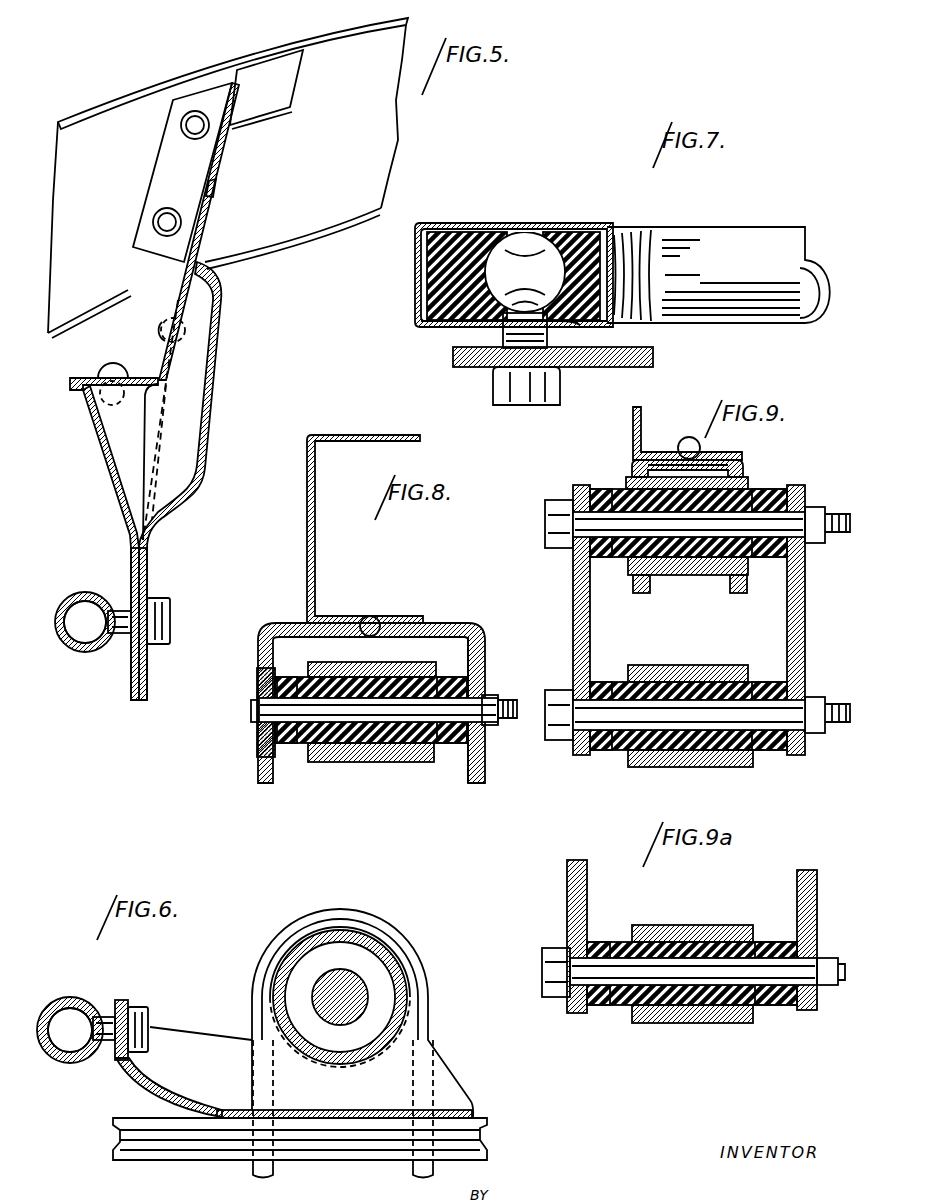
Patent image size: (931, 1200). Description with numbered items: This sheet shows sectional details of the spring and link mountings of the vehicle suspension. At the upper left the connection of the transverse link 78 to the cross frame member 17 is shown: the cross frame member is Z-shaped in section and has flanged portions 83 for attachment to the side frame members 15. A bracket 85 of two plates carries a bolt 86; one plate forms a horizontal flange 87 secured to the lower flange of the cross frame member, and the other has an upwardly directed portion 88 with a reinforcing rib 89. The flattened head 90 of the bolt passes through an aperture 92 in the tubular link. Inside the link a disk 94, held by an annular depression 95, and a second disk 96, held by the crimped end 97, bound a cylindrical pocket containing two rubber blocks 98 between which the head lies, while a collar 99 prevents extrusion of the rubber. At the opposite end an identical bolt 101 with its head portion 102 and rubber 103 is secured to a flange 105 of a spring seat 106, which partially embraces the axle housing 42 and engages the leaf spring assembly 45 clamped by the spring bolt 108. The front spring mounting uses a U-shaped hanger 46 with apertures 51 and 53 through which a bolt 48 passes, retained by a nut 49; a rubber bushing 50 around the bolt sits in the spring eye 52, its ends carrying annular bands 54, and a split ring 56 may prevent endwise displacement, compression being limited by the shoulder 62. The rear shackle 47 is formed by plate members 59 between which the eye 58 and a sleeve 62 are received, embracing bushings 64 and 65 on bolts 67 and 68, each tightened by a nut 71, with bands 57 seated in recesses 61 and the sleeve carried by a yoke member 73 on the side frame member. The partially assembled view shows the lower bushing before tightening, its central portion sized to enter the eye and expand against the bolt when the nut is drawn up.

In FIG. 5, the side frame member 15 is at (378, 137).
In FIG. 8, the side frame member 15 is at (306, 566).
In FIG. 9, the side frame member 15 is at (631, 428).
In FIG. 5, the cross frame member 17 is at (222, 162).
In FIG. 6, the axle housing 42 is at (300, 952).
In FIG. 6, the leaf spring assembly 45 is at (183, 1135).
In FIG. 8, the hanger 46 is at (470, 630).
In FIG. 9, the shackle 47 is at (552, 583).
In FIG. 8, the bolt 48 is at (290, 706).
In FIG. 8, the nut 49 is at (489, 728).
In FIG. 8, the bushing 50 is at (357, 757).
In FIG. 8, the aperture 51 is at (487, 684).
In FIG. 8, the spring eye 52 is at (300, 745).
In FIG. 8, the aperture 53 is at (262, 650).
In FIG. 8, the annular band 54 is at (292, 745).
In FIG. 8, the split ring 56 is at (263, 742).
In FIG. 9, the split ring 56 is at (690, 557).
In FIG. 9A, the split ring 56 is at (692, 1005).
In FIG. 9, the annular band 57 is at (606, 557).
In FIG. 9A, the annular band 57 is at (615, 1005).
In FIG. 9, the eye 58 is at (676, 668).
In FIG. 9A, the eye 58 is at (715, 926).
In FIG. 9, the plate member 59 is at (580, 601).
In FIG. 9A, the plate member 59 is at (570, 880).
In FIG. 9A, the recess 61 is at (612, 963).
In FIG. 8, the sleeve 62 is at (484, 708).
In FIG. 9, the sleeve 62 is at (672, 575).
In FIG. 9, the bushing 64 is at (745, 484).
In FIG. 9, the bushing 65 is at (660, 767).
In FIG. 9A, the bushing 65 is at (672, 1023).
In FIG. 9, the bolt 67 is at (565, 517).
In FIG. 9, the bolt 68 is at (600, 716).
In FIG. 9A, the bolt 68 is at (583, 978).
In FIG. 9, the nut 71 is at (816, 508).
In FIG. 9A, the nut 71 is at (830, 957).
In FIG. 9, the yoke member 73 is at (650, 463).
In FIG. 5, the transverse link 78 is at (84, 593).
In FIG. 7, the transverse link 78 is at (735, 225).
In FIG. 6, the transverse link 78 is at (66, 997).
In FIG. 5, the flanged portion 83 is at (167, 160).
In FIG. 5, the bracket 85 is at (148, 560).
In FIG. 7, the bracket 85 is at (470, 367).
In FIG. 5, the bolt 86 is at (130, 642).
In FIG. 7, the bolt 86 is at (566, 368).
In FIG. 5, the flange 87 is at (83, 410).
In FIG. 5, the upwardly directed portion 88 is at (213, 197).
In FIG. 5, the reinforcing rib 89 is at (208, 373).
In FIG. 5, the head 90 is at (78, 632).
In FIG. 7, the head 90 is at (540, 237).
In FIG. 5, the aperture 92 is at (119, 608).
In FIG. 7, the aperture 92 is at (493, 327).
In FIG. 7, the disk 94 is at (607, 287).
In FIG. 7, the annular depression 95 is at (613, 227).
In FIG. 7, the disk 96 is at (425, 280).
In FIG. 7, the crimped portion 97 is at (420, 320).
In FIG. 7, the block 98 is at (470, 228).
In FIG. 7, the collar 99 is at (565, 328).
In FIG. 6, the bolt 101 is at (118, 1045).
In FIG. 6, the head portion 102 is at (60, 1042).
In FIG. 6, the rubber 103 is at (93, 1012).
In FIG. 6, the flange 105 is at (150, 1036).
In FIG. 6, the spring seat 106 is at (342, 1119).
In FIG. 6, the spring bolt 108 is at (428, 1038).